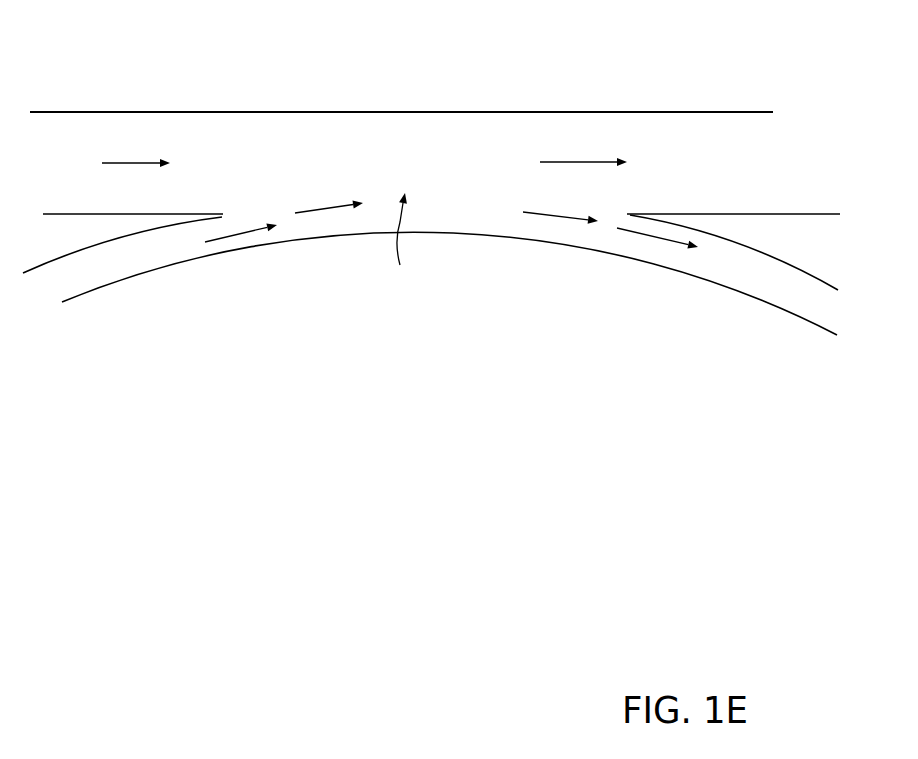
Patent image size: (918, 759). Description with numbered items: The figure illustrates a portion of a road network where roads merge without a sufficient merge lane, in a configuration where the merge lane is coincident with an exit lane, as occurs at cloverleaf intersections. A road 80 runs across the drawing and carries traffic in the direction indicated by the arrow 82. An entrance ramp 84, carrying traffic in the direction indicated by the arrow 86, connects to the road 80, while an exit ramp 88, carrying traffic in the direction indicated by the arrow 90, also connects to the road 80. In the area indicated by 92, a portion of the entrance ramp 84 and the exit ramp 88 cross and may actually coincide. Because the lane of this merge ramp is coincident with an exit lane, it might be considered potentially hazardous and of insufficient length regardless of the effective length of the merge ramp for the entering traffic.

The road 80 is at (285, 94).
The arrow 82 is at (120, 163).
The entrance ramp 84 is at (105, 304).
The arrow 86 is at (313, 220).
The exit ramp 88 is at (708, 283).
The arrow 90 is at (653, 243).
The area 92 is at (403, 265).